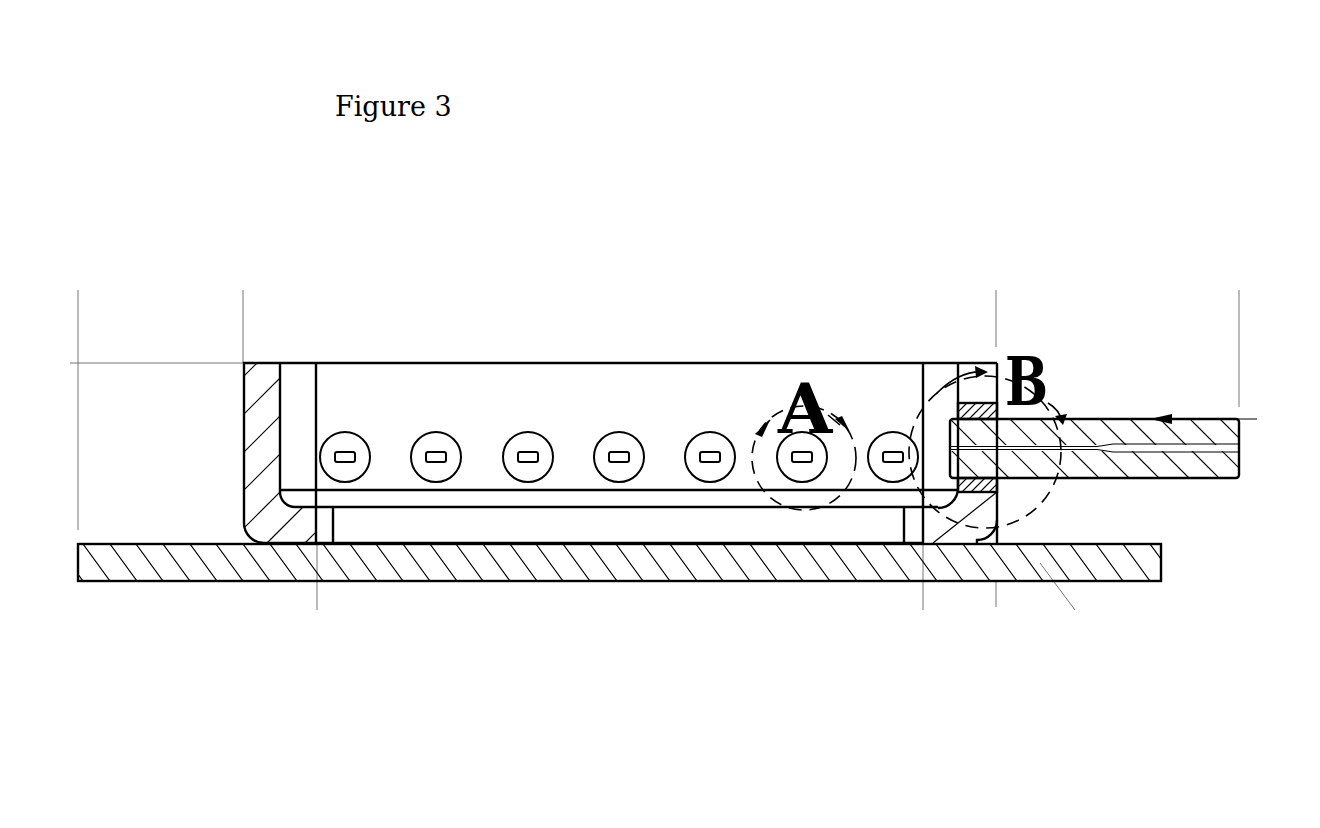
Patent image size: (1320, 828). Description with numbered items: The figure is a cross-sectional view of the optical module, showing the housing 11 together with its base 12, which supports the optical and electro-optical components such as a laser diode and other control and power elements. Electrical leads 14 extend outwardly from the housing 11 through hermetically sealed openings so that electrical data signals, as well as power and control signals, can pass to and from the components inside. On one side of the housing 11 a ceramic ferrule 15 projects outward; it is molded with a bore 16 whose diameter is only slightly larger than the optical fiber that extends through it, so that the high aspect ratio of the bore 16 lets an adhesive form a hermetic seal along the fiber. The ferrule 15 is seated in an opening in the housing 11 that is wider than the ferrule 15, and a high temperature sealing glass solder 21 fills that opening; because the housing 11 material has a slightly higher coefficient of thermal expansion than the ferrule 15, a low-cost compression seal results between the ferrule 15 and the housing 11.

The housing 11 is at (277, 403).
The base 12 is at (137, 572).
The electrical leads 14 is at (350, 442).
The ceramic ferrule 15 is at (1200, 465).
The bore 16 is at (1233, 449).
The sealing glass solder 21 is at (997, 489).